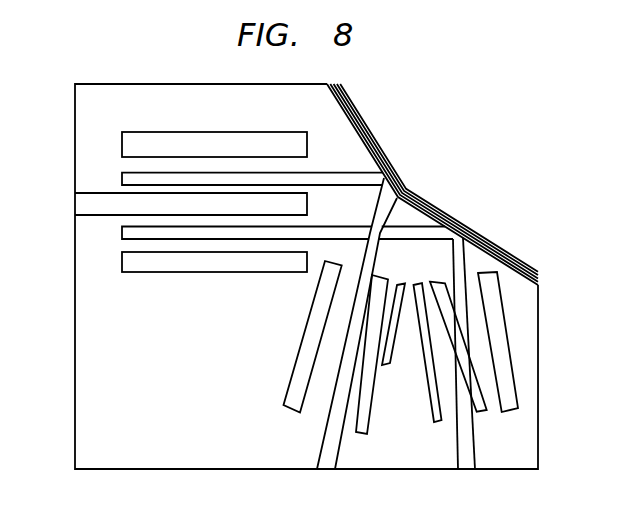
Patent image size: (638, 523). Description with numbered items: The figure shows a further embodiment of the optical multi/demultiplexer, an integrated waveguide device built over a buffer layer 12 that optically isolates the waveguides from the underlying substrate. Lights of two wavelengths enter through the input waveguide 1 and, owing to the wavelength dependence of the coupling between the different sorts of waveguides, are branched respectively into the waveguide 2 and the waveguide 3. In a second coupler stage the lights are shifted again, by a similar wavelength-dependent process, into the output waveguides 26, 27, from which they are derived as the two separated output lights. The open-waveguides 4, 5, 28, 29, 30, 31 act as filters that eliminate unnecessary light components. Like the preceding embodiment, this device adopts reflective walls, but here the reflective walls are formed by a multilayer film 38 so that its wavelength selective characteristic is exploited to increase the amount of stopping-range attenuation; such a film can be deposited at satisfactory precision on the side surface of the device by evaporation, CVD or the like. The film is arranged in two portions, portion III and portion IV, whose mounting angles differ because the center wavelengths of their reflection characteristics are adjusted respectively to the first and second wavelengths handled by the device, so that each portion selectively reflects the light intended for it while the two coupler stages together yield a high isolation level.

The waveguide 1 is at (92, 203).
The waveguide 2 is at (315, 177).
The waveguide 3 is at (313, 230).
The open-waveguide 4 is at (187, 140).
The open-waveguide 5 is at (180, 267).
The buffer layer 12 is at (160, 470).
The waveguide 26 is at (332, 432).
The waveguide 27 is at (465, 433).
The open-waveguide 28 is at (503, 335).
The open-waveguide 29 is at (430, 387).
The open-waveguide 30 is at (375, 376).
The open-waveguide 31 is at (299, 356).
The multilayer film 38 is at (408, 195).
The portion of the multilayer film III is at (390, 176).
The portion of the multilayer film IV is at (460, 230).